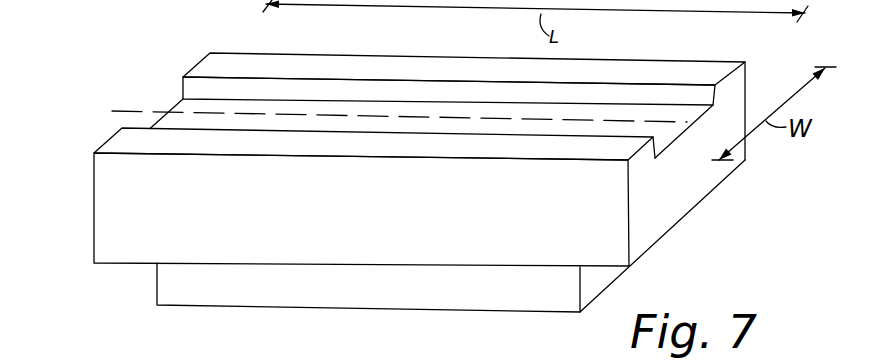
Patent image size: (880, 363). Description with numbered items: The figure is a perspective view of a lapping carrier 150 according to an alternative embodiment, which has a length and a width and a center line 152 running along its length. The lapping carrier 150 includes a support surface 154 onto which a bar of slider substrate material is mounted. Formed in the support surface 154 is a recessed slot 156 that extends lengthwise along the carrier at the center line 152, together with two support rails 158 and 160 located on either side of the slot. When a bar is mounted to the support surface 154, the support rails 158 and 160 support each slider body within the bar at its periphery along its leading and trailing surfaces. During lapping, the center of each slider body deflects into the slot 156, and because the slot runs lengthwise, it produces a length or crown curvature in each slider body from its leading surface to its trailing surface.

The lapping carrier 150 is at (84, 197).
The center line 152 is at (132, 110).
The support surface 154 is at (229, 66).
The recessed slot 156 is at (323, 108).
The support rail 158 is at (421, 68).
The support rail 160 is at (412, 150).